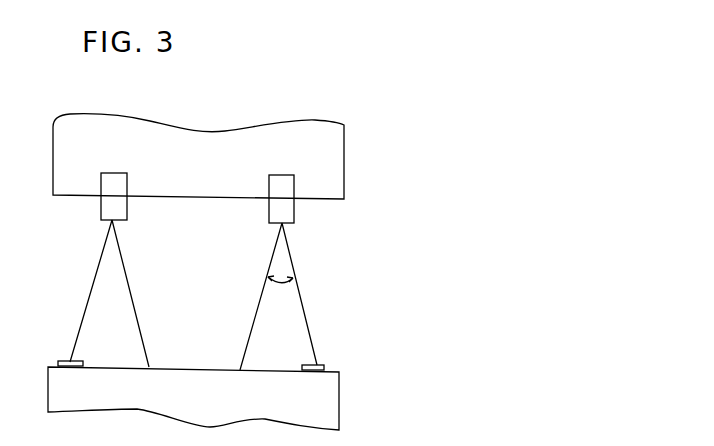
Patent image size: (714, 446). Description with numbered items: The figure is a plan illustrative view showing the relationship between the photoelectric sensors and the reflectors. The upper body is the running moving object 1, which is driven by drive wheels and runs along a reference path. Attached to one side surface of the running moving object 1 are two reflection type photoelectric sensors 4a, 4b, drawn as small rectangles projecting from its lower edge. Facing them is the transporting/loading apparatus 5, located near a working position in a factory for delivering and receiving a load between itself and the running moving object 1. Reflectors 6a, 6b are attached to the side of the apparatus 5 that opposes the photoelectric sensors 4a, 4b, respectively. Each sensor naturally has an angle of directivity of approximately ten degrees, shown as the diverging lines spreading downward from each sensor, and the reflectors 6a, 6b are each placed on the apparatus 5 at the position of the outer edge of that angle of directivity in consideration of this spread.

The running moving object 1 is at (344, 133).
The reflection type photoelectric sensor 4a is at (106, 182).
The reflection type photoelectric sensor 4b is at (293, 186).
The transporting/loading apparatus 5 is at (336, 405).
The reflector 6a is at (62, 362).
The reflector 6b is at (322, 364).